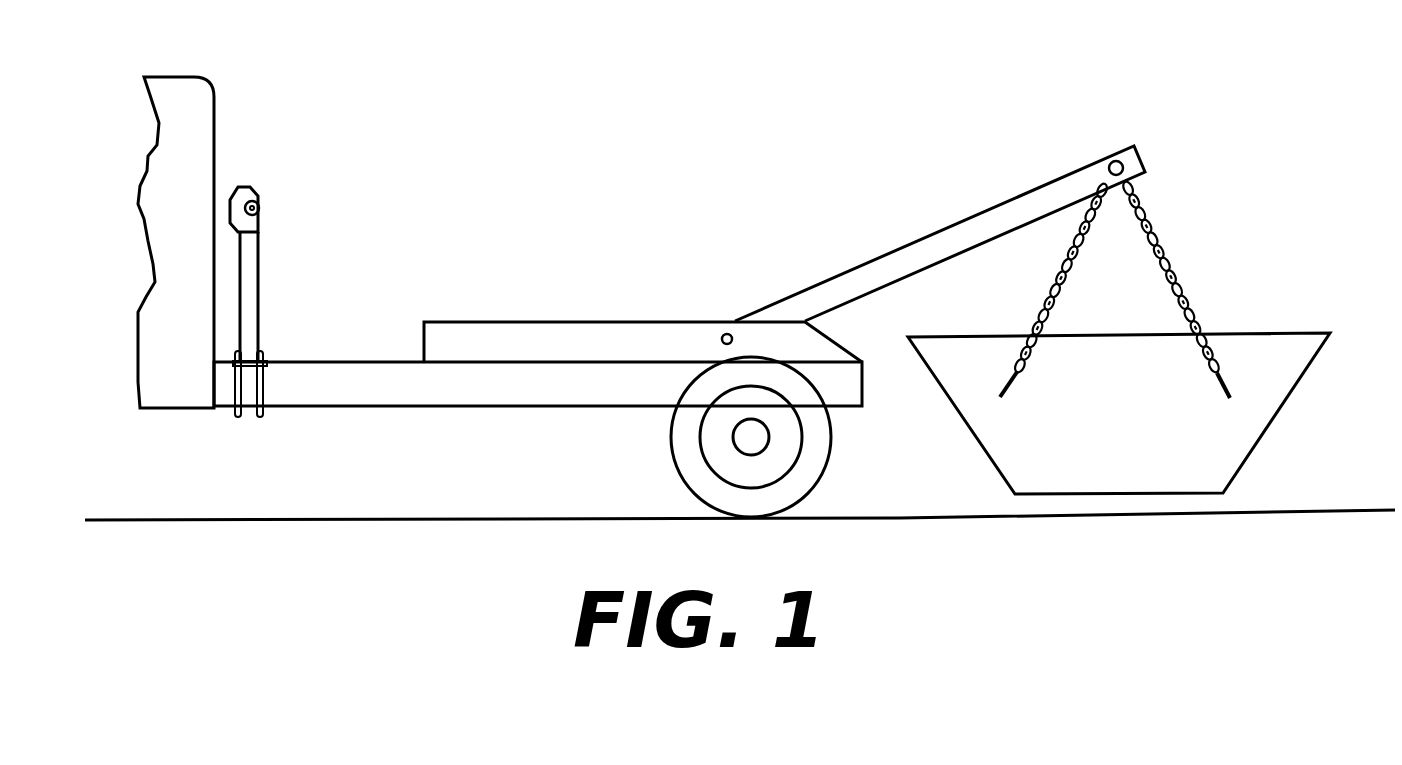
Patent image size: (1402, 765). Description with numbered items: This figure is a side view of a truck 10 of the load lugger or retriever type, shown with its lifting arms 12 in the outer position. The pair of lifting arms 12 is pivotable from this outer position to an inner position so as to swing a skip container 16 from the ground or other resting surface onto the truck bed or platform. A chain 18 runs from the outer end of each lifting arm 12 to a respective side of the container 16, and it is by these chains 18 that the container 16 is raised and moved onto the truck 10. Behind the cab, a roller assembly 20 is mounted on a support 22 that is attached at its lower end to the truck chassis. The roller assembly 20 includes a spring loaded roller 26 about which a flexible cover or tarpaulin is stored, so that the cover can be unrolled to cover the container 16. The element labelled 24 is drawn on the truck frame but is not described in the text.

The truck 10 is at (352, 125).
The lifting arms 12 is at (953, 222).
The skip container 16 is at (1308, 372).
The chain 18 is at (1160, 262).
The roller assembly 20 is at (274, 260).
The support 22 is at (259, 302).
The trailer frame 24 is at (387, 394).
The spring loaded roller 26 is at (259, 207).